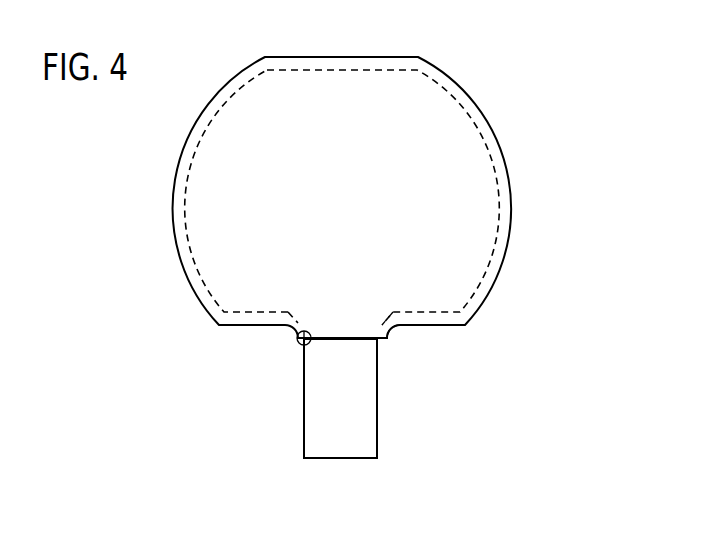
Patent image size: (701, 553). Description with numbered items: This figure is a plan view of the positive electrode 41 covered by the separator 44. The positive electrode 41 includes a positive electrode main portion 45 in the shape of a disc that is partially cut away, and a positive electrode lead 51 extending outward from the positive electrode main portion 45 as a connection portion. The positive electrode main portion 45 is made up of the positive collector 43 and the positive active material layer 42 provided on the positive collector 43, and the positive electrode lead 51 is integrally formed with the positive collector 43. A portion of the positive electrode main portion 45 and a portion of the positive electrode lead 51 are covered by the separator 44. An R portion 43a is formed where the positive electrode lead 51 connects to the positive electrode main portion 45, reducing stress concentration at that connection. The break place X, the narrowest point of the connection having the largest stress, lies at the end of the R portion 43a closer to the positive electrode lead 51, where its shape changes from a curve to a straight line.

The positive electrode 41 is at (458, 104).
The positive active material layer 42 is at (458, 273).
The positive collector 43 is at (473, 236).
The R portion 43a is at (407, 337).
The separator 44 is at (507, 182).
The positive electrode main portion 45 is at (203, 205).
The positive electrode lead 51 is at (362, 442).
The break place X is at (297, 345).